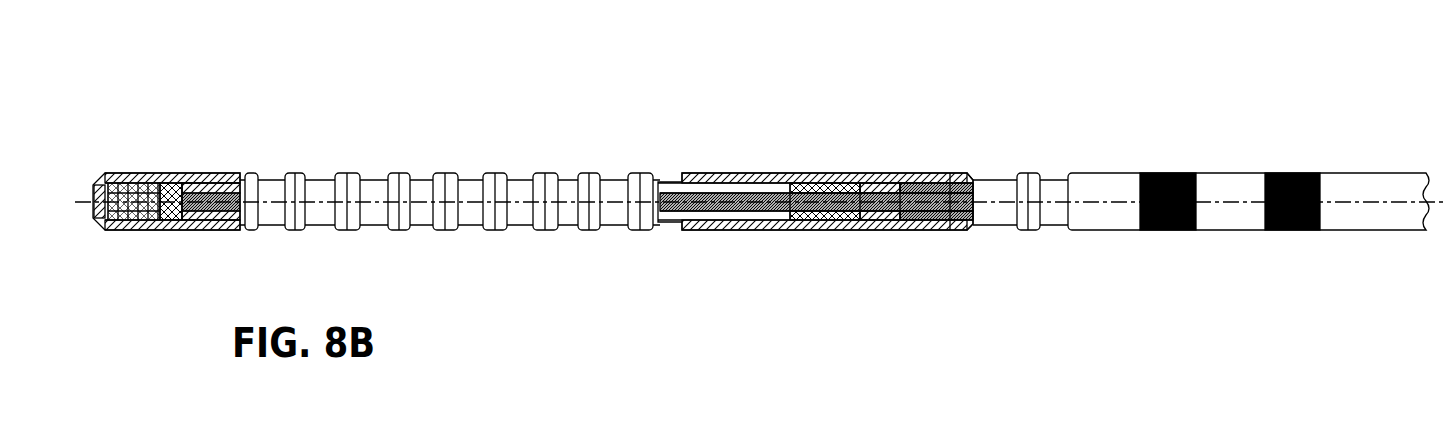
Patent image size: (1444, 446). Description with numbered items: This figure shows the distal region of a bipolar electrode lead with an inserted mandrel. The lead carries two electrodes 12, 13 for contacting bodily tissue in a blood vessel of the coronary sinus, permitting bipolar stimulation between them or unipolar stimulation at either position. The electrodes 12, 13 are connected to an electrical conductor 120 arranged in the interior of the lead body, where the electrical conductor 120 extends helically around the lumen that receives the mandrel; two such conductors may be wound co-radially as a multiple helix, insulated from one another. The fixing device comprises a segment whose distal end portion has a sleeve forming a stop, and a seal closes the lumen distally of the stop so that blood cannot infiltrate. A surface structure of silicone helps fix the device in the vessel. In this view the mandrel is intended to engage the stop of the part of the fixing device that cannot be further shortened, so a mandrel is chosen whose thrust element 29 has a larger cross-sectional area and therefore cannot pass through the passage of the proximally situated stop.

The electrode 12 is at (1175, 173).
The electrode 13 is at (1300, 173).
The thrust element 29 is at (204, 188).
The electrical conductor 120 is at (903, 173).